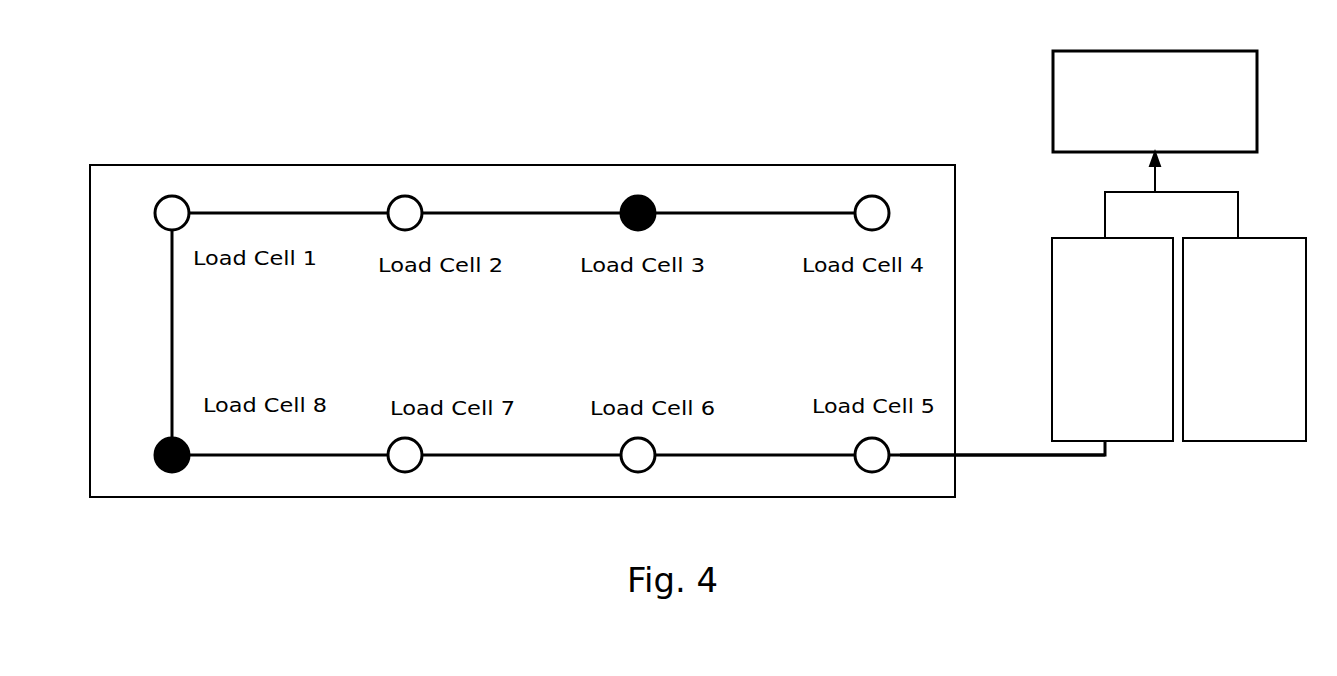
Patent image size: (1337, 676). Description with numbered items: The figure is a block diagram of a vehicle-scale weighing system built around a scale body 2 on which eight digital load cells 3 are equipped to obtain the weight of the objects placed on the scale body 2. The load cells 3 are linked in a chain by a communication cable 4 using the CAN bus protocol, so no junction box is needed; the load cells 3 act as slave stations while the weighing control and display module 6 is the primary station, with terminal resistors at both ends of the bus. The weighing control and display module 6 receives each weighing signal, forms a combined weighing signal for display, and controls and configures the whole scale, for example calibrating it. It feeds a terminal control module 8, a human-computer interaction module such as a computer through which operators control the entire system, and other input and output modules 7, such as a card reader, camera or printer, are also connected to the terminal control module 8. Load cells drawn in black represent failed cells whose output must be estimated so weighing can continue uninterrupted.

The scale body 2 is at (488, 152).
The digital load cells 3 is at (882, 198).
The communication cable 4 is at (978, 443).
The weighing control and display module 6 is at (1050, 247).
The other input and output modules 7 is at (1283, 235).
The terminal control module 8 is at (1213, 50).